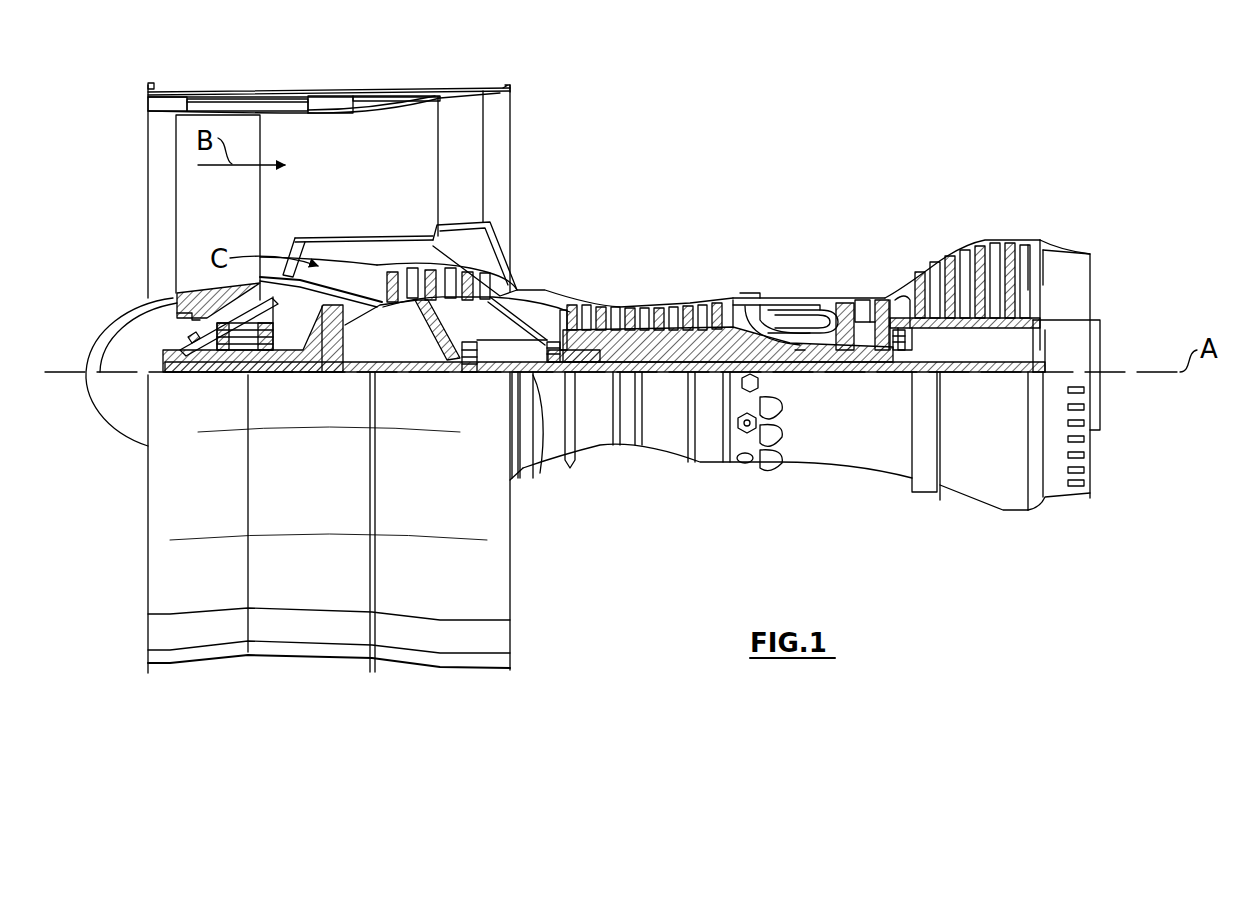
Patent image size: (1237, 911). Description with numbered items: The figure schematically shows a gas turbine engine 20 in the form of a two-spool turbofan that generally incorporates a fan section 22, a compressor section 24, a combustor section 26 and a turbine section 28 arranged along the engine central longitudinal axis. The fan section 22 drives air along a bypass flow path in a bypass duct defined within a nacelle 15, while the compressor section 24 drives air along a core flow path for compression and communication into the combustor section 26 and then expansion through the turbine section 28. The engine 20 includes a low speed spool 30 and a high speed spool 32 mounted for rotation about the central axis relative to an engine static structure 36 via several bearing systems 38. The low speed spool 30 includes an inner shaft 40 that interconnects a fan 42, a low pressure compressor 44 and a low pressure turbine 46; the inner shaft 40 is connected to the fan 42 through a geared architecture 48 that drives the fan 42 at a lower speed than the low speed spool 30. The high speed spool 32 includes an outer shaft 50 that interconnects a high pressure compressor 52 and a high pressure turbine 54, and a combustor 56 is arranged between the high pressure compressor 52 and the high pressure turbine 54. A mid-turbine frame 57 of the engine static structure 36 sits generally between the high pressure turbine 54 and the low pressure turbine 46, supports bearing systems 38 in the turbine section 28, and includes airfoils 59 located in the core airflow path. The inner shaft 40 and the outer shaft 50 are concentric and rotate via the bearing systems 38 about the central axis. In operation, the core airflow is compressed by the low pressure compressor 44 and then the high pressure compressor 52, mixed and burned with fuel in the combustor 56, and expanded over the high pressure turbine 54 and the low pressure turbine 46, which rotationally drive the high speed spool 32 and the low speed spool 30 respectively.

The nacelle 15 is at (331, 94).
The gas turbine engine 20 is at (790, 140).
The fan section 22 is at (258, 84).
The compressor section 24 is at (562, 278).
The combustor section 26 is at (784, 272).
The turbine section 28 is at (932, 232).
The low speed spool 30 is at (670, 380).
The high speed spool 32 is at (710, 330).
The engine static structure 36 is at (708, 458).
The bearing systems 38 is at (470, 352).
The inner shaft 40 is at (540, 395).
The fan 42 is at (235, 220).
The low pressure compressor 44 is at (435, 288).
The low pressure turbine 46 is at (975, 264).
The geared architecture 48 is at (338, 352).
The outer shaft 50 is at (796, 356).
The high pressure compressor 52 is at (640, 348).
The high pressure turbine 54 is at (852, 300).
The combustor 56 is at (785, 312).
The mid-turbine frame 57 is at (895, 282).
The airfoils 59 is at (892, 318).